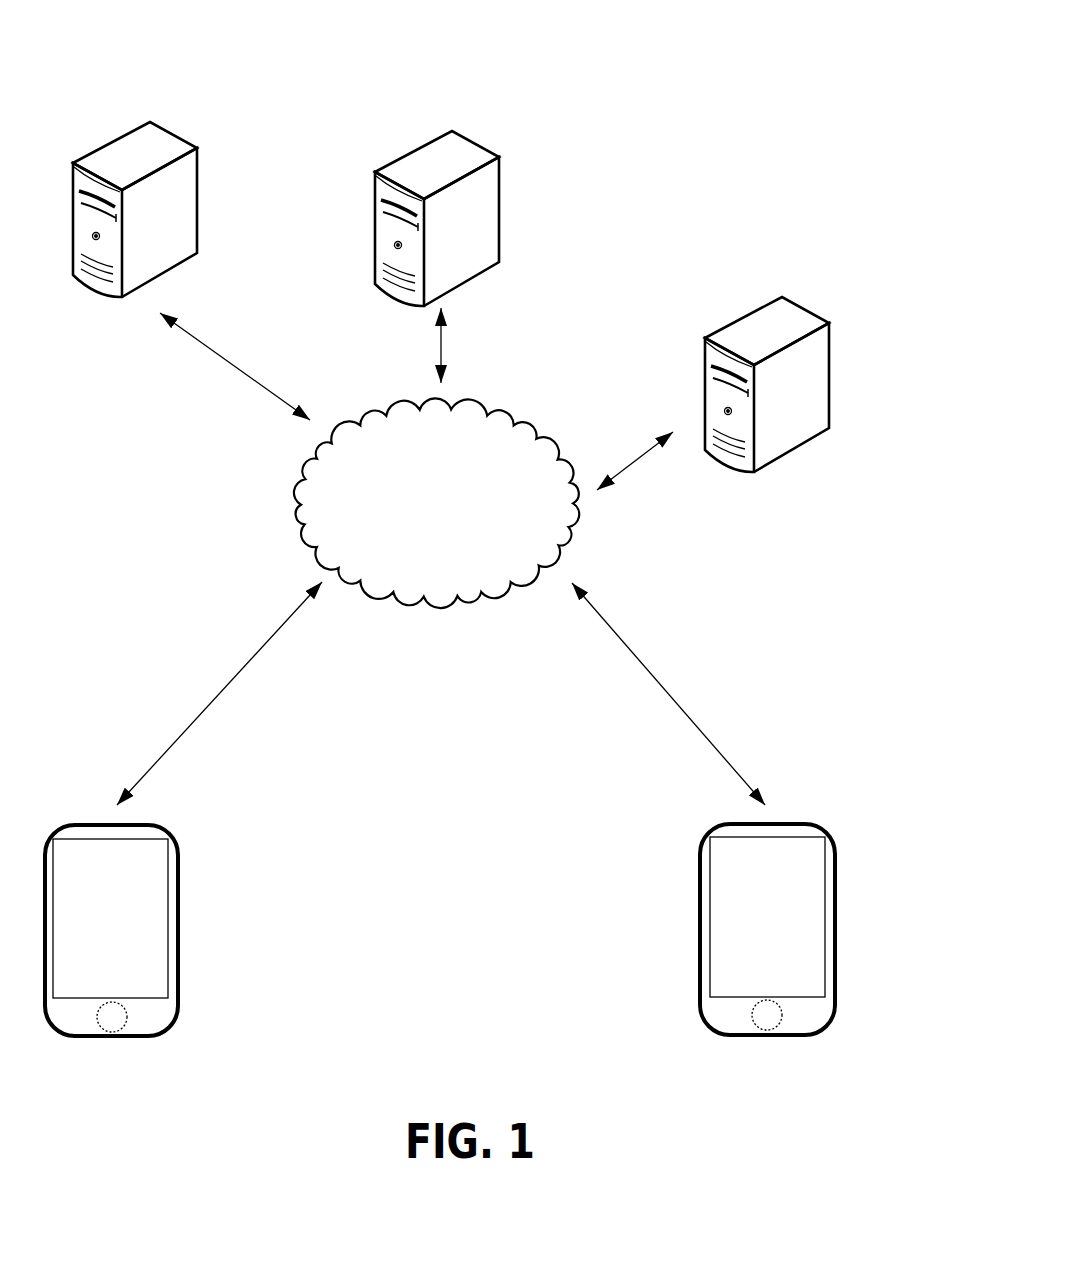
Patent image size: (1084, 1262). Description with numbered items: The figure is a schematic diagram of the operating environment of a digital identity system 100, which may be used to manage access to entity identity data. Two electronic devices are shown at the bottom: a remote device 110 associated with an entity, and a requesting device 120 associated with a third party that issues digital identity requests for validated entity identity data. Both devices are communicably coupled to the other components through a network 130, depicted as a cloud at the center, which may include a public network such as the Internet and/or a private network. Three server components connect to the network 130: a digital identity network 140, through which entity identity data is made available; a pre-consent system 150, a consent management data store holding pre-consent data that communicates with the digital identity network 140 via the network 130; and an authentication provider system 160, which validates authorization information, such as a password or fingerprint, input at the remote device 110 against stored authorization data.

The digital identity system 100 is at (682, 92).
The remote device 110 is at (153, 832).
The requesting device 120 is at (838, 812).
The network 130 is at (459, 514).
The digital identity network 140 is at (813, 302).
The pre-consent system 150 is at (466, 150).
The authentication provider system 160 is at (177, 121).